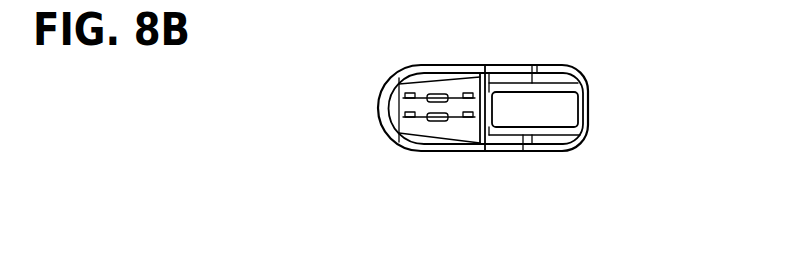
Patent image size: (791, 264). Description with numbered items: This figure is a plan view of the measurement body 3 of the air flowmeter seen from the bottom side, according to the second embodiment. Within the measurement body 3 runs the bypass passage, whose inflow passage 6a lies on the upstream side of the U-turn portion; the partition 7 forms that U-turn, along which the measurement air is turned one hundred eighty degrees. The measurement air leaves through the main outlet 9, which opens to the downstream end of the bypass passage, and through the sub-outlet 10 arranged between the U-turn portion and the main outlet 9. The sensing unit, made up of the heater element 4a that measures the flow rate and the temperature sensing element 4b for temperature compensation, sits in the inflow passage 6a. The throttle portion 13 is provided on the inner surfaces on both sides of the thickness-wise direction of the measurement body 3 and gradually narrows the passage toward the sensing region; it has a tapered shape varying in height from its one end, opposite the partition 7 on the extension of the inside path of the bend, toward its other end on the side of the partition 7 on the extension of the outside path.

The measurement body 3 is at (562, 64).
The heater element 4a is at (445, 122).
The temperature sensing element 4b is at (440, 94).
The partition 7 is at (501, 99).
The main outlet 9 is at (567, 111).
The throttle portion 13 is at (415, 133).
The inflow passage 6a is at (479, 131).
The sub-outlet 10 is at (513, 142).